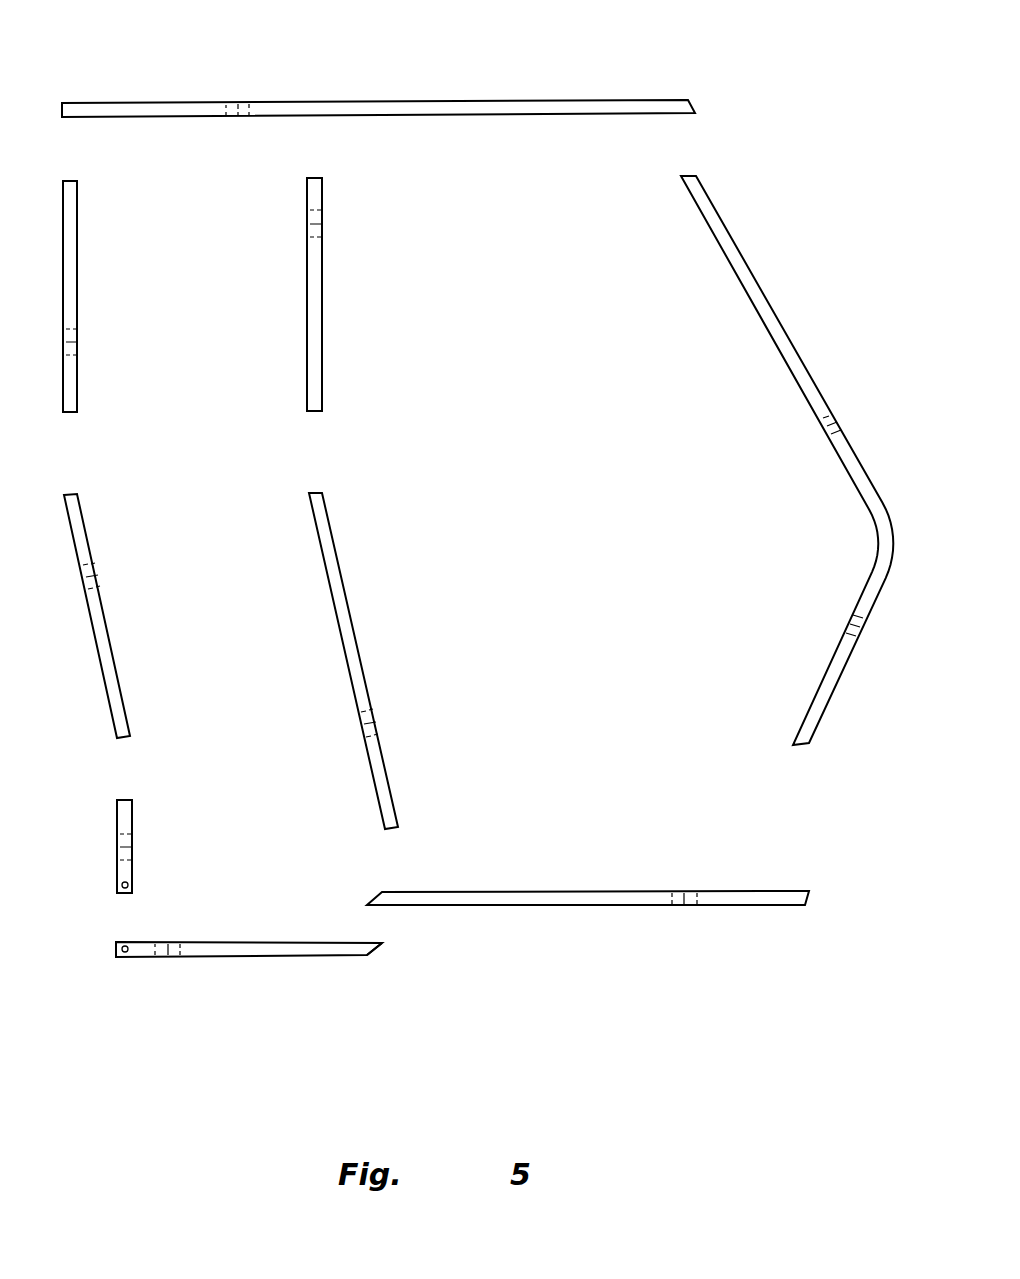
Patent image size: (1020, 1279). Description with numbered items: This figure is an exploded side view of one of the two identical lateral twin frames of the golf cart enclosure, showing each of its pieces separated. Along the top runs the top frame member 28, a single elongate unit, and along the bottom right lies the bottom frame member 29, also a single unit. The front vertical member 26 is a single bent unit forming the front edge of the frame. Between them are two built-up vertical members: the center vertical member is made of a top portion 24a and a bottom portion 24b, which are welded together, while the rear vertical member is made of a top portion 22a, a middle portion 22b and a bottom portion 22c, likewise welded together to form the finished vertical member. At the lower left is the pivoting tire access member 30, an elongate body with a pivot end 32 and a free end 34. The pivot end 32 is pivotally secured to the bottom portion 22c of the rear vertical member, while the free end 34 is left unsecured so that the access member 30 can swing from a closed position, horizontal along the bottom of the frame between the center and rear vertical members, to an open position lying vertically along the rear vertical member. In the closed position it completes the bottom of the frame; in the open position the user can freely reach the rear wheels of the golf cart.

The top frame member 28 is at (414, 100).
The top portion of rear vertical member 22a is at (77, 282).
The top portion of center vertical member 24a is at (322, 295).
The front vertical member 26 is at (800, 360).
The middle portion of rear vertical member 22b is at (107, 620).
The bottom portion of center vertical member 24b is at (361, 662).
The bottom portion of rear vertical member 22c is at (132, 845).
The pivoting tire access member 30 is at (243, 957).
The pivot end 32 is at (116, 950).
The free end 34 is at (370, 957).
The bottom frame member 29 is at (583, 905).